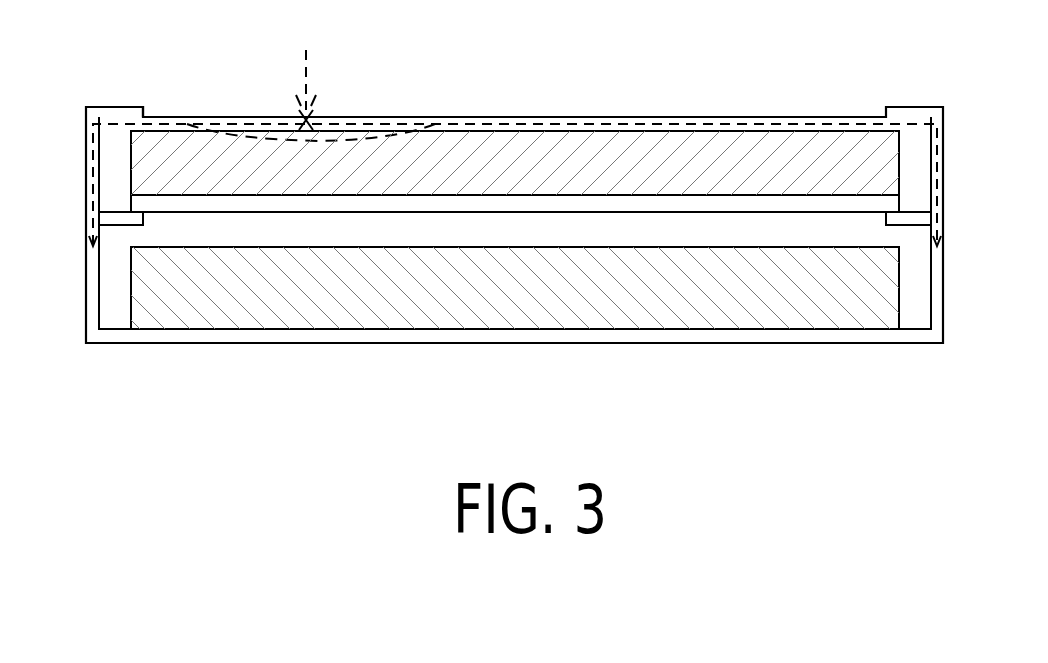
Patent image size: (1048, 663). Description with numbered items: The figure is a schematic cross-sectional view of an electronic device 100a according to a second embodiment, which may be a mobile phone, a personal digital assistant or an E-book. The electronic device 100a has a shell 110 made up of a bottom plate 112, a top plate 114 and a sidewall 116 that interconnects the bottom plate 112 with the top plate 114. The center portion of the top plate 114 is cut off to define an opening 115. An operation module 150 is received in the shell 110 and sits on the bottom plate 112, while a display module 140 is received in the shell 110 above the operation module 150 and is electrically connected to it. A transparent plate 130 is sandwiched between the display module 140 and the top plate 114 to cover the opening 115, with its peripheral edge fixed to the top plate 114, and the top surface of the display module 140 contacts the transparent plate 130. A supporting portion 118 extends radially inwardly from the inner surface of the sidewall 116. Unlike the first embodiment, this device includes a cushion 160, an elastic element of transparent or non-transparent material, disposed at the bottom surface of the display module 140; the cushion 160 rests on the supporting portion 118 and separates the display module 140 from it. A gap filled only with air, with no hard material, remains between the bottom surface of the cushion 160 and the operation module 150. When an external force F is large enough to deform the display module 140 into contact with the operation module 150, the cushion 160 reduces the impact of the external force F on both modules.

The electronic device 100a is at (800, 448).
The shell 110 is at (932, 355).
The bottom plate 112 is at (295, 336).
The top plate 114 is at (133, 110).
The opening 115 is at (840, 108).
The sidewall 116 is at (938, 262).
The supporting portion 118 is at (927, 218).
The transparent plate 130 is at (247, 127).
The display module 140 is at (658, 183).
The operation module 150 is at (490, 295).
The cushion 160 is at (422, 203).
The external force F is at (306, 74).